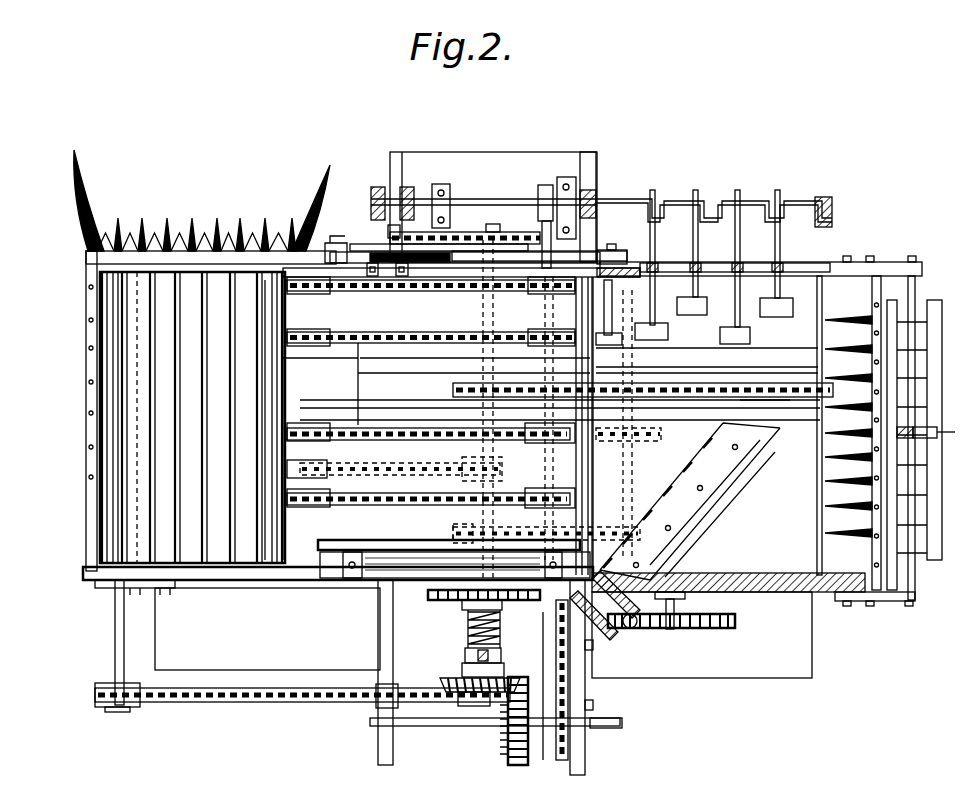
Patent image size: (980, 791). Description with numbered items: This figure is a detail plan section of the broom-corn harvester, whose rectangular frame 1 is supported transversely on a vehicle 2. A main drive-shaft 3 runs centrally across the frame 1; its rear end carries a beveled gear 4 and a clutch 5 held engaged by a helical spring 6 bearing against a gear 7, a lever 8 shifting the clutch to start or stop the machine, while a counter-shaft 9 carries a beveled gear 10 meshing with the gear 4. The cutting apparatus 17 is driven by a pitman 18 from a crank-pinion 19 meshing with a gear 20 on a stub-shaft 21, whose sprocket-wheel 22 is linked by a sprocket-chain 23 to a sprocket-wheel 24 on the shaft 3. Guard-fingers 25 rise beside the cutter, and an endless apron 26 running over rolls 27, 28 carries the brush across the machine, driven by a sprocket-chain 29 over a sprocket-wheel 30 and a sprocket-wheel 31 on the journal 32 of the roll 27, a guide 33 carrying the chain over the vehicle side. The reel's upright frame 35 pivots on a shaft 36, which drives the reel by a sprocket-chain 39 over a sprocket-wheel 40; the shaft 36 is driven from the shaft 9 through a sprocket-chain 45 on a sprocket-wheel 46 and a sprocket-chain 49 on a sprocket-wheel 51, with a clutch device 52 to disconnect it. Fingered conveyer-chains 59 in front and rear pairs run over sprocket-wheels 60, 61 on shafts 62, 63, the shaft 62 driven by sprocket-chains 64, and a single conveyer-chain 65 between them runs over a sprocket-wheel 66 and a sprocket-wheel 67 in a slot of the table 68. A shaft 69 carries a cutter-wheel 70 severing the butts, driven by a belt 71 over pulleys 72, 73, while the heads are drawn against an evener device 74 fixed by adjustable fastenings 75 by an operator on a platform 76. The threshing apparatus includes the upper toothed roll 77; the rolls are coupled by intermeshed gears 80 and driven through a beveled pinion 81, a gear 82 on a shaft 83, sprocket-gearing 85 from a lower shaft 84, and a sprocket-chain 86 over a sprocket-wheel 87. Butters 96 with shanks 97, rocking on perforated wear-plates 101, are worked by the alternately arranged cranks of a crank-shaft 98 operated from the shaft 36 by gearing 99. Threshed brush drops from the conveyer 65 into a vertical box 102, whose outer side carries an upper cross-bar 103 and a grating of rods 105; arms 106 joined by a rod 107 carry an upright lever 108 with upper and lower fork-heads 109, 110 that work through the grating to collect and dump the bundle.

The rectangular frame 1 is at (96, 581).
The vehicle 2 is at (378, 630).
The main drive-shaft 3 is at (497, 241).
The beveled gear 4 is at (442, 683).
The clutch 5 is at (463, 669).
The helical spring 6 is at (468, 630).
The gear 7 is at (441, 600).
The lever 8 is at (496, 652).
The counter-shaft 9 is at (413, 727).
The beveled gear 10 is at (510, 755).
The cutting apparatus 17 is at (184, 236).
The pitman 18 is at (340, 243).
The crank-pinion 19 is at (368, 258).
The gear 20 is at (410, 268).
The stub-shaft 21 is at (405, 246).
The sprocket-wheel 22 is at (390, 228).
The sprocket-chain 23 is at (452, 240).
The sprocket-wheel 24 is at (480, 232).
The guard-fingers 25 is at (86, 352).
The endless apron 26 is at (112, 503).
The roll 27 is at (137, 541).
The roll 28 is at (265, 552).
The sprocket-chain 29 is at (228, 702).
The sprocket-wheel 30 is at (471, 707).
The sprocket-wheel 31 is at (124, 708).
The journal 32 is at (115, 645).
The guide 33 is at (376, 693).
The upright frame 35 is at (377, 187).
The shaft 36 is at (466, 205).
The sprocket-chain 39 is at (445, 182).
The sprocket-wheel 40 is at (450, 192).
The sprocket-chain 45 is at (586, 685).
The sprocket-wheel 46 is at (586, 753).
The sprocket-chain 49 is at (566, 178).
The sprocket-wheel 51 is at (541, 188).
The clutch device 52 is at (556, 742).
The conveyer-chains 59 is at (367, 331).
The sprocket-wheels 60 is at (312, 284).
The sprocket-wheels 61 is at (547, 294).
The shaft 62 is at (358, 373).
The shaft 63 is at (556, 470).
The sprocket-chains 64 is at (378, 463).
The conveyer-chain 65 is at (700, 400).
The sprocket-wheel 66 is at (463, 397).
The sprocket-wheel 67 is at (760, 400).
The table 68 is at (503, 467).
The shaft 69 is at (612, 290).
The cutter-wheel 70 is at (618, 333).
The belt 71 is at (588, 254).
The pulley 72 is at (622, 252).
The pulley 73 is at (500, 270).
The evener device 74 is at (398, 550).
The fastenings 75 is at (352, 580).
The platform 76 is at (267, 629).
The upper roll 77 is at (738, 488).
The intermeshed gears 80 is at (612, 640).
The beveled pinion 81 is at (636, 627).
The gear 82 is at (695, 630).
The shaft 83 is at (678, 600).
The lower shaft 84 is at (622, 455).
The sprocket-gearing 85 is at (645, 443).
The sprocket-chain 86 is at (582, 530).
The sprocket-wheel 87 is at (494, 533).
The butters 96 is at (668, 335).
The shank portions 97 is at (656, 240).
The crank-shaft 98 is at (619, 203).
The gearing 99 is at (586, 160).
The perforated wear-plate 101 is at (657, 263).
The vertical box 102 is at (824, 552).
The upper cross-bar 103 is at (872, 306).
The rods 105 is at (870, 356).
The arms 106 is at (890, 264).
The rod 107 is at (916, 287).
The upright lever 108 is at (938, 433).
The upper fork-head 109 is at (942, 340).
The lower fork-head 110 is at (942, 523).